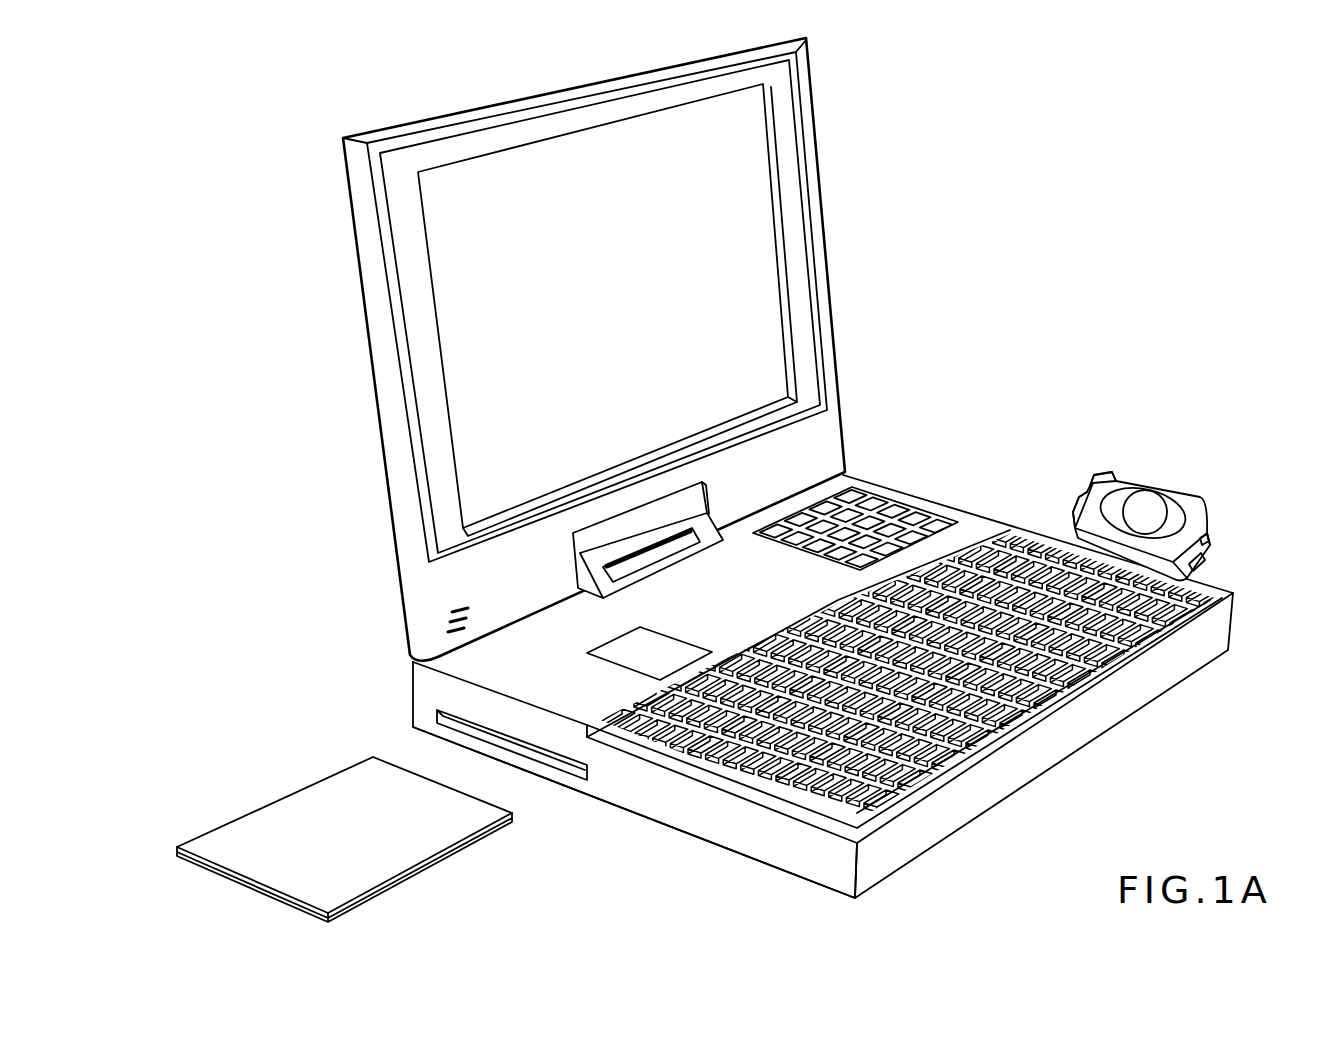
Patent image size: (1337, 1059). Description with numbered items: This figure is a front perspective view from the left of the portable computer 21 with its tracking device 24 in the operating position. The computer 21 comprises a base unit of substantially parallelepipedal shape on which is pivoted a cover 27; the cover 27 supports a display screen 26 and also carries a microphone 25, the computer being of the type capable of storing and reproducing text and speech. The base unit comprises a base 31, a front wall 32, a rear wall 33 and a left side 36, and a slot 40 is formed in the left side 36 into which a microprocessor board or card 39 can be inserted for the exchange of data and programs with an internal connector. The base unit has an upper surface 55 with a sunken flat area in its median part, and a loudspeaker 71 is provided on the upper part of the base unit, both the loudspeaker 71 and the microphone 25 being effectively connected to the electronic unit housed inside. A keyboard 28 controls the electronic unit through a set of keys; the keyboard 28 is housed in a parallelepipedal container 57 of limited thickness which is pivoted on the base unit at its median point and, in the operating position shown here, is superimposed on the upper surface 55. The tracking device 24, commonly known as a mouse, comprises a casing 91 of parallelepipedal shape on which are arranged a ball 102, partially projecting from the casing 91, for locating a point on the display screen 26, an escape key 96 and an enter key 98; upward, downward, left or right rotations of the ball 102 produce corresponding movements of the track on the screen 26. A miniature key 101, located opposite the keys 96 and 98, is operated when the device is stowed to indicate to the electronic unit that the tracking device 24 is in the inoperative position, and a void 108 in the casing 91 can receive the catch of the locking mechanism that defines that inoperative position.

The portable computer 21 is at (752, 480).
The tracking device 24 is at (1166, 498).
The microphone 25 is at (440, 632).
The display screen 26 is at (530, 177).
The cover 27 is at (383, 346).
The keyboard 28 is at (978, 497).
The base 31 is at (648, 557).
The front wall 32 is at (1042, 748).
The rear wall 33 is at (410, 697).
The left side 36 is at (790, 852).
The microprocessor board or card 39 is at (305, 810).
The slot 40 is at (560, 763).
The upper surface 55 is at (560, 620).
The container 57 is at (1132, 660).
The loudspeaker 71 is at (613, 667).
The casing 91 is at (1197, 508).
The escape key 96 is at (1073, 506).
The enter key 98 is at (1101, 476).
The miniature key 101 is at (1197, 565).
The ball 102 is at (1144, 507).
The void 108 is at (1216, 535).